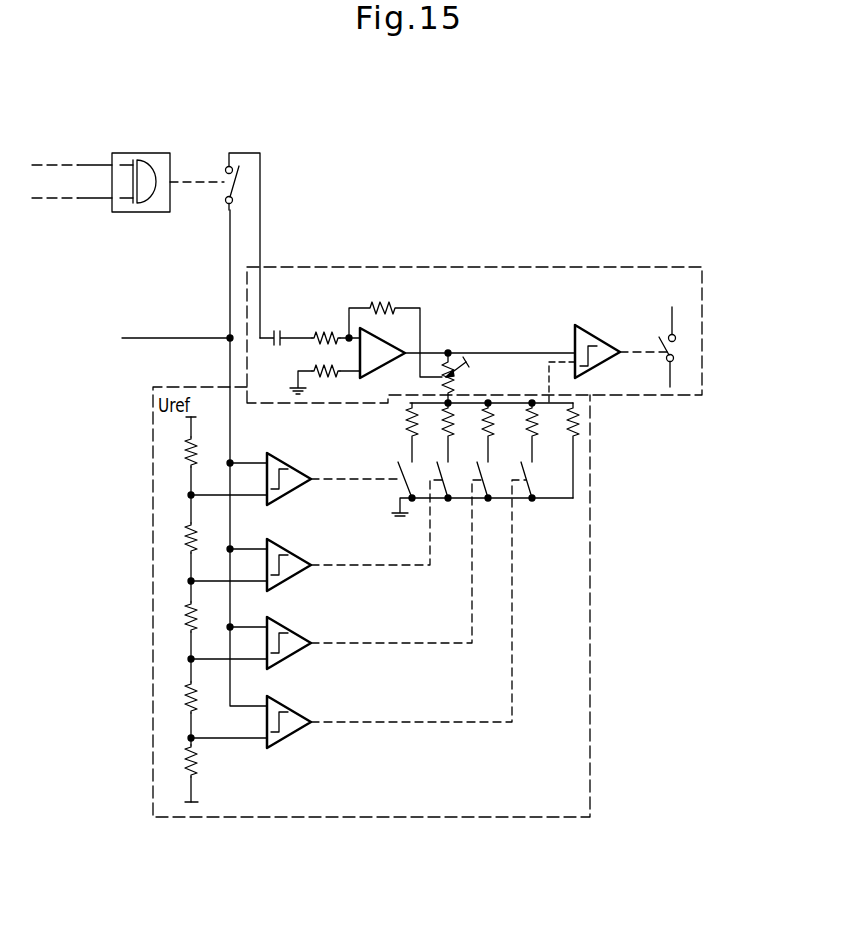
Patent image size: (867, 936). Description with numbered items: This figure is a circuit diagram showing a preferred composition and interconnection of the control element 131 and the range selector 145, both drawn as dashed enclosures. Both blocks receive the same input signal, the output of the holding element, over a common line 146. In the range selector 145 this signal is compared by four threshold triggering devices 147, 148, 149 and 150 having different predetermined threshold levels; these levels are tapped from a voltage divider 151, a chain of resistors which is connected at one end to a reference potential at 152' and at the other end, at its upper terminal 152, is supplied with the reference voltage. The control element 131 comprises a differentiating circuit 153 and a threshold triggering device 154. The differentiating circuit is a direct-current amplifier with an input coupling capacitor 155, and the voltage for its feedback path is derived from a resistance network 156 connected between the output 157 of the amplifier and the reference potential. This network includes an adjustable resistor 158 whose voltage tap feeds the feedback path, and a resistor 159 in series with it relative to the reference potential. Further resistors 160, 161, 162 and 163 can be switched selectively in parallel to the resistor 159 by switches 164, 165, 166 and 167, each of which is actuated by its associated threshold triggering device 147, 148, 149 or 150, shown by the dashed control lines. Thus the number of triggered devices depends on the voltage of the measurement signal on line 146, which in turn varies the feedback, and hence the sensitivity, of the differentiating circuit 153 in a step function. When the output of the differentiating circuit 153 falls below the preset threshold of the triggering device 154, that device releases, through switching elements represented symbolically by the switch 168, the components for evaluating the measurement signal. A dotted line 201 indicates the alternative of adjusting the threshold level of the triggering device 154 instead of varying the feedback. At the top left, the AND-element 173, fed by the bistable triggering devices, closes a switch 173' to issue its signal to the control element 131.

The control element 131 is at (702, 292).
The range selector 145 is at (590, 632).
The common line 146 is at (175, 337).
The threshold triggering device 147 is at (287, 463).
The threshold triggering device 148 is at (295, 550).
The threshold triggering device 149 is at (298, 637).
The threshold triggering device 150 is at (293, 709).
The voltage divider 151 is at (183, 538).
The reference voltage terminal 152 is at (207, 417).
The reference potential connection 152' is at (203, 828).
The differentiating circuit 153 is at (383, 294).
The threshold triggering device 154 is at (606, 340).
The input coupling capacitor 155 is at (280, 333).
The resistance network 156 is at (488, 393).
The output of the amplifier 157 is at (432, 352).
The adjustable resistor 158 is at (456, 367).
The resistor 159 is at (578, 430).
The resistor 160 is at (405, 437).
The resistor 161 is at (446, 436).
The resistor 162 is at (485, 436).
The resistor 163 is at (528, 436).
The switch 164 is at (398, 484).
The switch 165 is at (443, 484).
The switch 166 is at (483, 484).
The switch 167 is at (527, 484).
The switch 168 is at (677, 329).
The AND-element 173 is at (128, 164).
The switch 173' is at (273, 244).
The dotted line 201 is at (548, 374).